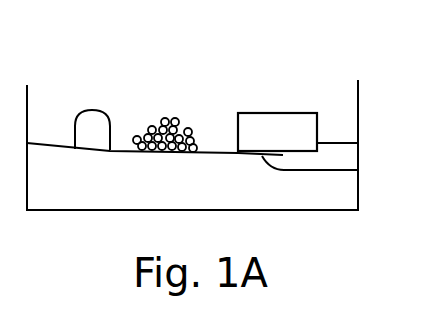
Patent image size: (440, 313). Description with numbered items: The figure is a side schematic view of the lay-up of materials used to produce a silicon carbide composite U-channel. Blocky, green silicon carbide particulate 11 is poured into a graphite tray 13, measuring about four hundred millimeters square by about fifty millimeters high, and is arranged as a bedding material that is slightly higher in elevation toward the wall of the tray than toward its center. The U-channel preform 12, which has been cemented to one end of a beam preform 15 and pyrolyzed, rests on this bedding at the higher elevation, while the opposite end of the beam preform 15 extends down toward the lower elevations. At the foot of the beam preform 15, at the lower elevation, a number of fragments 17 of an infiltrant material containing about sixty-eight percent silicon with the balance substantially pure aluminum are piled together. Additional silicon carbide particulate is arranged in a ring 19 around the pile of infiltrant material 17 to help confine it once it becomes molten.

The silicon carbide particulate 11 is at (337, 194).
The U-channel preform 12 is at (281, 128).
The graphite tray 13 is at (358, 92).
The beam preform 15 is at (358, 166).
The fragments of infiltrant material 17 is at (165, 118).
The ring of silicon carbide particulate 19 is at (93, 124).